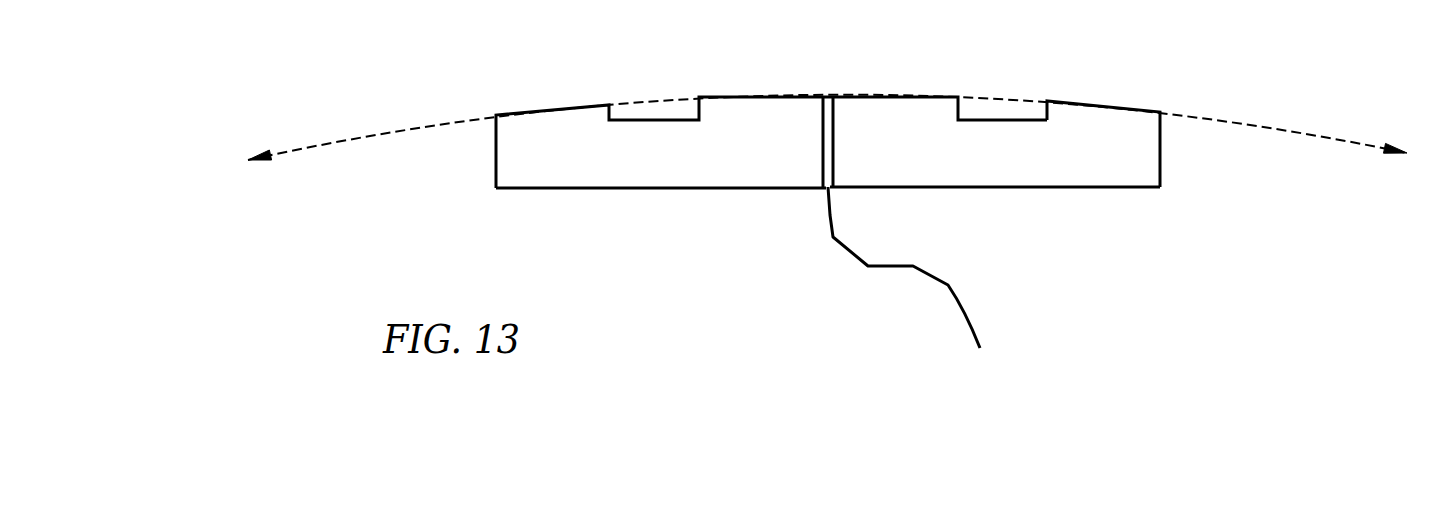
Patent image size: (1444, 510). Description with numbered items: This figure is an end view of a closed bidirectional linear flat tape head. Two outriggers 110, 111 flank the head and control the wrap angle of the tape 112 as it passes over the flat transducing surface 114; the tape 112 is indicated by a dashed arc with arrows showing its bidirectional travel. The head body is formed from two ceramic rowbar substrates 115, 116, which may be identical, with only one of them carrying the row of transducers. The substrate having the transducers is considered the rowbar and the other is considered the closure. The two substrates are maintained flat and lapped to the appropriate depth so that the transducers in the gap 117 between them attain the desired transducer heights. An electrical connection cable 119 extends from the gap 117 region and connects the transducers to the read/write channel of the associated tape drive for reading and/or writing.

The outrigger 110 is at (551, 108).
The outrigger 111 is at (1105, 103).
The tape 112 is at (1277, 130).
The flat transducing surface 114 is at (905, 93).
The ceramic rowbar substrate 115 is at (704, 190).
The ceramic rowbar substrate 116 is at (1103, 190).
The gap 117 is at (828, 93).
The electrical connection cable 119 is at (982, 342).